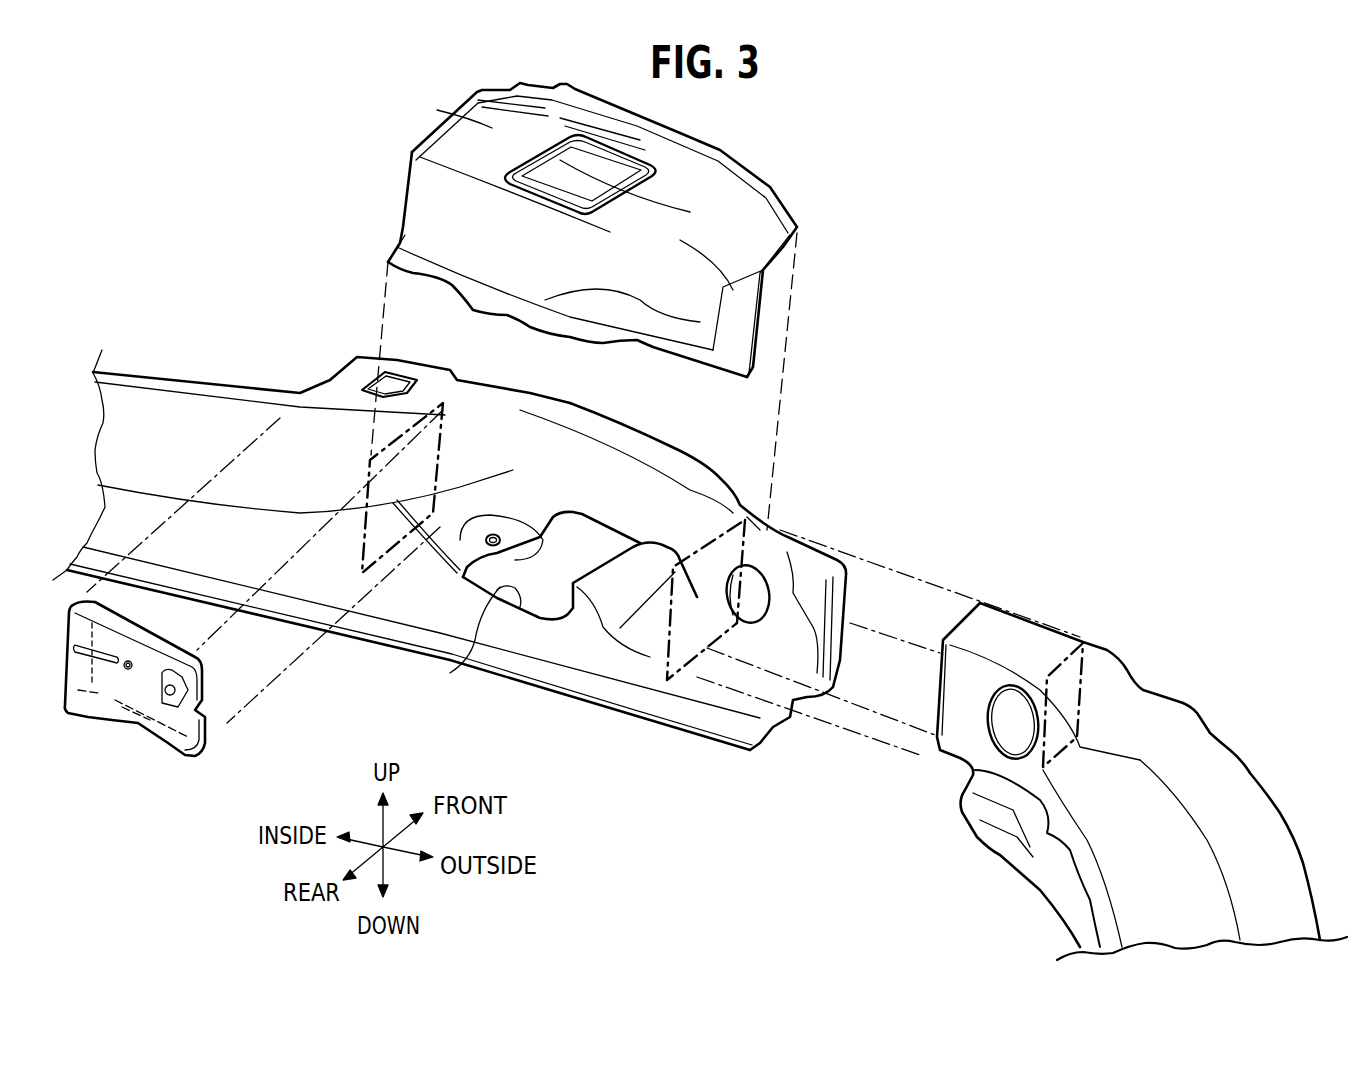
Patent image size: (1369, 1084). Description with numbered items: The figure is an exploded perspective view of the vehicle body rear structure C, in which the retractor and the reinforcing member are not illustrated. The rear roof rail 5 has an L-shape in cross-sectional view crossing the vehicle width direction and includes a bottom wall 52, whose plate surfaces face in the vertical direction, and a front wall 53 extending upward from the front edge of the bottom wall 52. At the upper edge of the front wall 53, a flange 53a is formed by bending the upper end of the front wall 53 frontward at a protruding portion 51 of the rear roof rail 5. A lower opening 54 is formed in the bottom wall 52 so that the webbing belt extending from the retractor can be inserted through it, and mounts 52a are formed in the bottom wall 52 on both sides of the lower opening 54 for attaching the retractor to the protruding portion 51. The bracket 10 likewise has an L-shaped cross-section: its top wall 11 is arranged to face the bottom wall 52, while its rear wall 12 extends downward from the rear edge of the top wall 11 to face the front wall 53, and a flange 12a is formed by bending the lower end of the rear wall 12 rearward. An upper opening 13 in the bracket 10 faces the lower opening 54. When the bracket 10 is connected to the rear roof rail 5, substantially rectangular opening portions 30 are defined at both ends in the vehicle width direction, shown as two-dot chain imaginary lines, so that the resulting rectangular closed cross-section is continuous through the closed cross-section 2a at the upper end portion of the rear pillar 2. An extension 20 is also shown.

The rear pillar 2 is at (1213, 737).
The closed cross-section at the upper end portion of the rear pillar 2a is at (1110, 647).
The rear roof rail 5 is at (165, 358).
The bracket 10 is at (743, 163).
The top wall 11 is at (449, 104).
The rear wall 12 is at (417, 222).
The flange 12a is at (487, 297).
The upper opening 13 is at (630, 168).
The extension 20 is at (155, 732).
The opening portions 30 is at (380, 447).
The protruding portion 51 is at (668, 423).
The bottom wall 52 is at (620, 693).
The mounts 52a is at (487, 523).
The front wall 53 is at (260, 397).
The flange 53a is at (577, 417).
The lower opening 54 is at (458, 643).
The vehicle body rear structure C is at (977, 247).